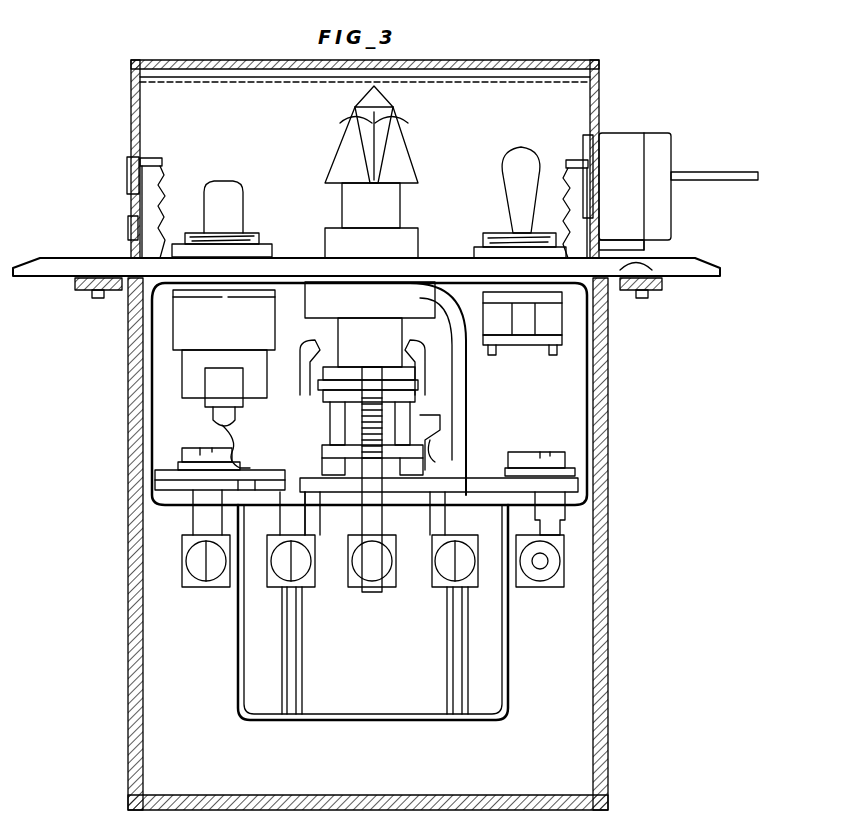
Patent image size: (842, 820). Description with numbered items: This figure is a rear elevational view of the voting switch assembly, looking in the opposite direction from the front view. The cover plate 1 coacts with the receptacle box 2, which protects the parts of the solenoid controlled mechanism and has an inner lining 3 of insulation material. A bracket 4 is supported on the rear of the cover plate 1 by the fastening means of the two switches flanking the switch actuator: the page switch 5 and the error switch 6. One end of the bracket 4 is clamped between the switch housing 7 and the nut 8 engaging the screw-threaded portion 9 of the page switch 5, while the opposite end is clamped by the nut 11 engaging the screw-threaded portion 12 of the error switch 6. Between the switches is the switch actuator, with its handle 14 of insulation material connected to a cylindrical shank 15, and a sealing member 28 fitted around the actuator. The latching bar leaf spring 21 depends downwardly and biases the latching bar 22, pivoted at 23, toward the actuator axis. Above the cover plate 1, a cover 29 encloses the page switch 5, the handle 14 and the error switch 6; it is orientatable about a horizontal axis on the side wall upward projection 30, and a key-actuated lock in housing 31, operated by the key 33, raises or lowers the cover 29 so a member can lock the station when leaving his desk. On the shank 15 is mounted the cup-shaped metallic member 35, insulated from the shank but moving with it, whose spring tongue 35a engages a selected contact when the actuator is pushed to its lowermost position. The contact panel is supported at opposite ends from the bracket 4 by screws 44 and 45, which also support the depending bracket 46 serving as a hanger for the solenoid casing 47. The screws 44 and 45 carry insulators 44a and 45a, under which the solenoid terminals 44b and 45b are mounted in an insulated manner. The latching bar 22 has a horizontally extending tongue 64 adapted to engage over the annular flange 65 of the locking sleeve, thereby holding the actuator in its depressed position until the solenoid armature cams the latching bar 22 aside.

The cover plate 1 is at (55, 284).
The receptacle box 2 is at (130, 466).
The inner lining 3 is at (152, 670).
The bracket 4 is at (160, 388).
The page switch 5 is at (520, 164).
The error switch 6 is at (222, 197).
The switch housing 7 is at (195, 328).
The nut 8 is at (478, 250).
The screw-threaded portion 9 is at (497, 233).
The nut 11 is at (266, 251).
The screw-threaded portion 12 is at (228, 237).
The handle 14 is at (396, 156).
The cylindrical shank 15 is at (346, 200).
The latching bar leaf spring 21 is at (470, 398).
The latching bar 22 is at (452, 385).
The pivot 23 is at (418, 306).
The sealing member 28 is at (400, 240).
The cover 29 is at (156, 103).
The side wall upward projection 30 is at (142, 152).
The lock housing 31 is at (664, 158).
The key 33 is at (717, 172).
The metallic member 35 is at (340, 380).
The spring tongue 35a is at (360, 405).
The screw 44 is at (200, 450).
The insulator 44a is at (182, 466).
The solenoid terminal 44b is at (262, 482).
The screw 45 is at (567, 460).
The insulator 45a is at (556, 455).
The solenoid terminal 45b is at (490, 482).
The depending bracket 46 is at (477, 722).
The solenoid casing 47 is at (393, 713).
The tongue 64 is at (442, 433).
The annular flange 65 is at (432, 452).